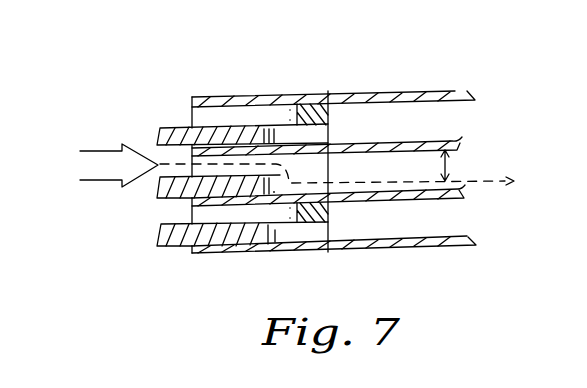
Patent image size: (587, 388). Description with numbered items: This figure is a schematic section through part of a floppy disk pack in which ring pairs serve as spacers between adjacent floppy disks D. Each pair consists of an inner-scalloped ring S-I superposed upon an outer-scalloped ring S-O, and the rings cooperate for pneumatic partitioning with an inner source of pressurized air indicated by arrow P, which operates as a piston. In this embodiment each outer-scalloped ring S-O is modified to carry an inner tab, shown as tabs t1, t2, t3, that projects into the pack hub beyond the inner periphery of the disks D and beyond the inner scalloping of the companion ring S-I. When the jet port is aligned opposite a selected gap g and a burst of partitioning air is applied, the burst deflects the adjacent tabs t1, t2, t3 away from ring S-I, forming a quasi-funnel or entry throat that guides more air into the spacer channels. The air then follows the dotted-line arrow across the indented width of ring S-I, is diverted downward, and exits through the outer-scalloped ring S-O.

The inner tab t1 is at (170, 248).
The inner tab t2 is at (158, 204).
The inner tab t3 is at (158, 127).
The pressurized air source P is at (288, 165).
The inner-scalloped ring S-I is at (342, 96).
The outer-scalloped ring S-O is at (368, 264).
The floppy disk D is at (453, 92).
The gap g is at (447, 172).